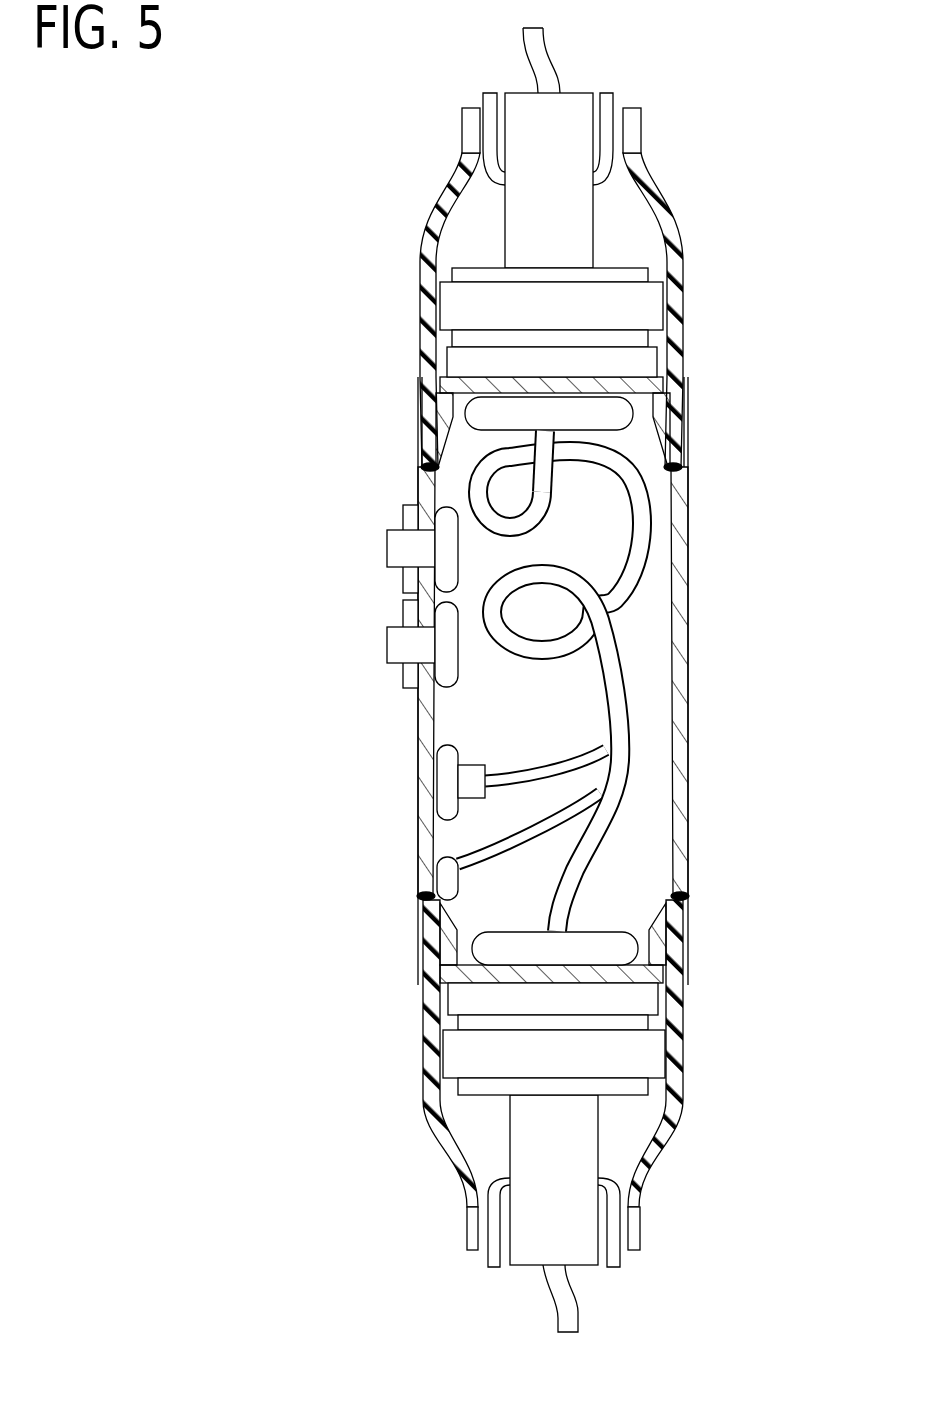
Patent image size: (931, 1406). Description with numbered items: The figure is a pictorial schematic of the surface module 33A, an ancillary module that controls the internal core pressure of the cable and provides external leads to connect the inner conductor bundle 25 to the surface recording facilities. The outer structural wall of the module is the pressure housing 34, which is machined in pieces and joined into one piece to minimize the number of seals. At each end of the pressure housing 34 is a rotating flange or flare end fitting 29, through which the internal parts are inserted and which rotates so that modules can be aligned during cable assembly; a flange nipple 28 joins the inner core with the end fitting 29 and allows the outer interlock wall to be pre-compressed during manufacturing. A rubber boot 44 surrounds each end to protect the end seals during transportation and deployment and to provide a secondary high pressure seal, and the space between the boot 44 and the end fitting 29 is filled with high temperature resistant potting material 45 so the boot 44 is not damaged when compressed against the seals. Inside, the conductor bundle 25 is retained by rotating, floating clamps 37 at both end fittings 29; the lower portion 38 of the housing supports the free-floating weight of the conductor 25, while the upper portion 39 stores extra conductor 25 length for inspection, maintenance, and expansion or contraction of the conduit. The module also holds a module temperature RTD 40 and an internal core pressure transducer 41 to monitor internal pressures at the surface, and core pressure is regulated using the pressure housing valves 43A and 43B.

The conductor bundle 25 is at (597, 678).
The flange nipple 28 is at (573, 225).
The flange or flare end fitting 29 is at (652, 305).
The surface module 33A is at (391, 366).
The pressure housing 34 is at (418, 480).
The rotating clamps 37 is at (562, 425).
The lower portion 38 is at (650, 905).
The upper portion 39 is at (603, 539).
The module temperature RTD 40 is at (458, 883).
The internal core pressure transducer 41 is at (452, 745).
The inner core fluid valve 43A is at (387, 547).
The inner core fluid valve 43B is at (387, 645).
The rubber boot 44 is at (663, 232).
The potting material 45 is at (492, 257).